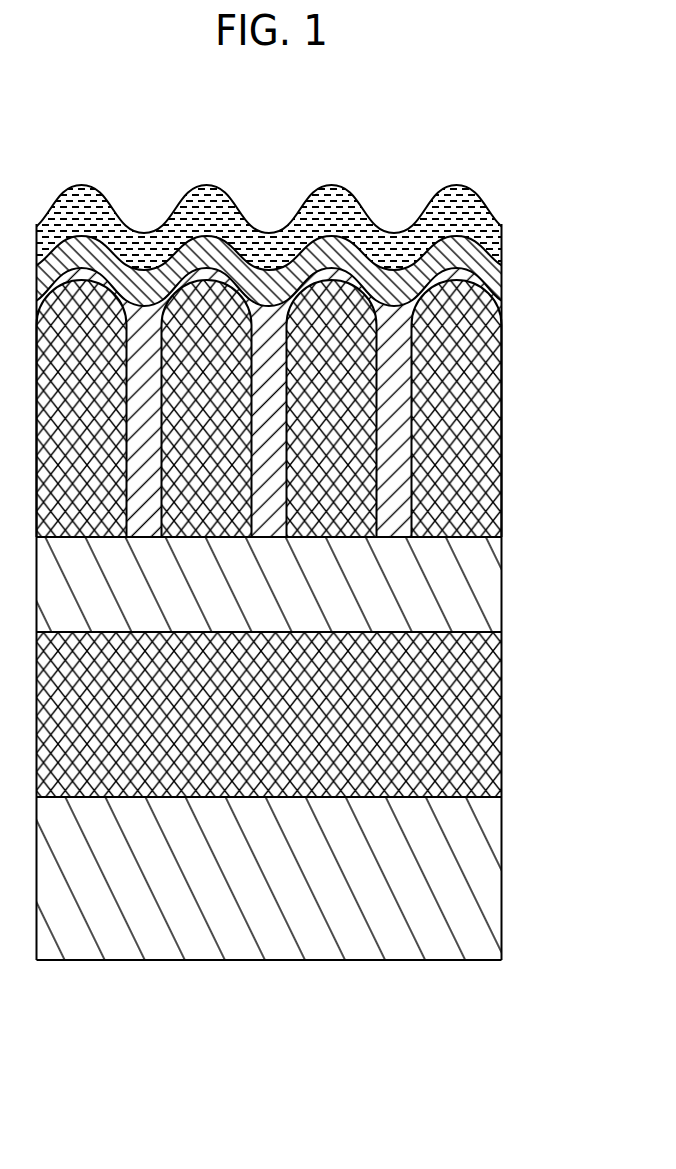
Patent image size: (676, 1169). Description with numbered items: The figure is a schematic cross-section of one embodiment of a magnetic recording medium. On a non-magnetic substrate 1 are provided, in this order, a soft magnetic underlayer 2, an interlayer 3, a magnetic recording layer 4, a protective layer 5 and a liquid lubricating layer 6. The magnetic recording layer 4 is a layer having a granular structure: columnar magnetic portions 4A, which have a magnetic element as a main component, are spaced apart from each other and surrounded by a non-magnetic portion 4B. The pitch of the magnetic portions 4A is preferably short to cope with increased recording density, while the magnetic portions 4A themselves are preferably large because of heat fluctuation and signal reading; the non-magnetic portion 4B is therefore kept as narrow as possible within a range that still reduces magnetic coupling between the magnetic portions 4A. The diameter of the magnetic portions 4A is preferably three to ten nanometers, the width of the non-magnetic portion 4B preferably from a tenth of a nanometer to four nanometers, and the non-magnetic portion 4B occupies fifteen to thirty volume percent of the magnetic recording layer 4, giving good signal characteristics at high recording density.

The non-magnetic substrate 1 is at (490, 888).
The soft magnetic underlayer 2 is at (490, 717).
The interlayer 3 is at (490, 578).
The magnetic recording layer 4 is at (324, 400).
The magnetic portions 4A is at (590, 435).
The non-magnetic portion 4B is at (398, 420).
The protective layer 5 is at (502, 273).
The liquid lubricating layer 6 is at (502, 227).